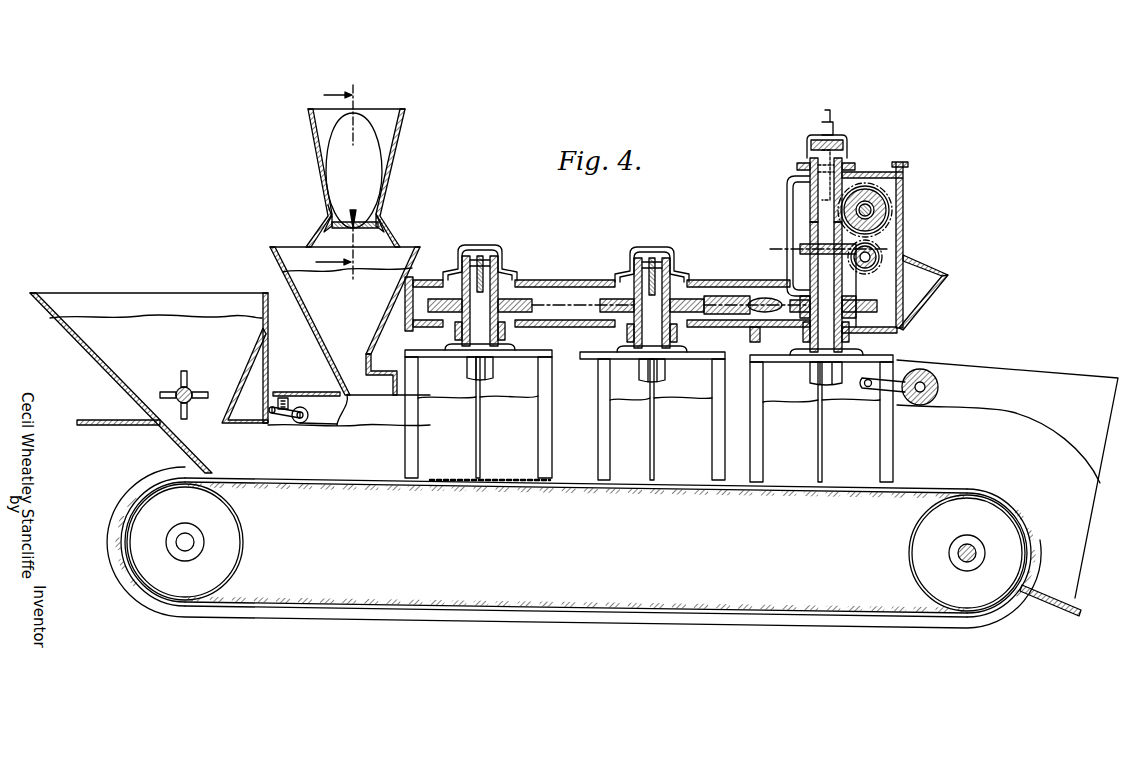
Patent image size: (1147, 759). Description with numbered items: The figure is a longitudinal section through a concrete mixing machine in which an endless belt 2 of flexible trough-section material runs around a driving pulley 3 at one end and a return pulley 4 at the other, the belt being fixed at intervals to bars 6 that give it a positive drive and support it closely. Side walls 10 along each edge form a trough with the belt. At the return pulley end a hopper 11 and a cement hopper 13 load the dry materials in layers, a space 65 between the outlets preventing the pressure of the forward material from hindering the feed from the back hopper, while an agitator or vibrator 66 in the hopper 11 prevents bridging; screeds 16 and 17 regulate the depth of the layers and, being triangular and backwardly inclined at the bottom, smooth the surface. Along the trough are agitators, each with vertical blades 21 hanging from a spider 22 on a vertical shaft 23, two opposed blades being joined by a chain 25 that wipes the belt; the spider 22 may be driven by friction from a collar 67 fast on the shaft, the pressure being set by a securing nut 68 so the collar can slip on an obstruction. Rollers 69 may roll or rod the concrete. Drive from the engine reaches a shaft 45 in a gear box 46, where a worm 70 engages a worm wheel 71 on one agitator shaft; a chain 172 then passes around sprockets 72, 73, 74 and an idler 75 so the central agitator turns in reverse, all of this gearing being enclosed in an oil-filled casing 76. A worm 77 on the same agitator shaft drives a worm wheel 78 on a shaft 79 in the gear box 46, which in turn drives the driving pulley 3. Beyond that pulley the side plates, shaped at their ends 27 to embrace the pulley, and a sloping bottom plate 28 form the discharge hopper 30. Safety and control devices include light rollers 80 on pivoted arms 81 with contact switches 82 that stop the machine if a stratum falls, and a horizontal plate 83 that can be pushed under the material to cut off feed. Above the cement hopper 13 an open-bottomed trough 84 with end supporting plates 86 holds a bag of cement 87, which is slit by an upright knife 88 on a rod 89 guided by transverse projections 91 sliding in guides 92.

The endless belt 2 is at (250, 492).
The driving pulley 3 is at (928, 552).
The return pulley 4 is at (142, 550).
The bars or rods 6 is at (410, 488).
The side walls 10 is at (380, 362).
The hopper 11 is at (150, 308).
The cement hopper 13 is at (312, 296).
The screed 16 is at (252, 392).
The screed 17 is at (385, 387).
The vertical blades 21 is at (410, 426).
The spider 22 is at (448, 357).
The vertical shaft 23 is at (480, 245).
The chain 25 is at (440, 480).
The ends of side plates 27 is at (1024, 552).
The bottom plate 28 is at (1048, 598).
The discharge hopper 30 is at (1060, 468).
The shaft 45 is at (880, 254).
The gear box 46 is at (888, 185).
The space 65 is at (322, 425).
The agitators or vibrators 66 is at (182, 378).
The collar 67 is at (508, 350).
The securing nut 68 is at (495, 372).
The rollers 69 is at (922, 370).
The worm 70 is at (880, 270).
The worm wheel 71 is at (800, 248).
The sprocket 72 is at (520, 299).
The sprocket 73 is at (616, 299).
The sprocket 74 is at (790, 302).
The idler 75 is at (762, 298).
The casing 76 is at (562, 280).
The worm 77 is at (808, 218).
The worm wheel 78 is at (882, 203).
The shaft 79 is at (872, 212).
The light rollers 80 is at (305, 423).
The pivoted arms 81 is at (290, 415).
The contact switches 82 is at (290, 398).
The horizontal plate 83 is at (110, 420).
The trough 84 is at (386, 124).
The supporting plates 86 is at (328, 213).
The bag of cement 87 is at (370, 162).
The upright knife 88 is at (352, 208).
The rod 89 is at (328, 230).
The transverse projections 91 is at (382, 229).
The guides 92 is at (378, 224).
The chain 172 is at (712, 296).